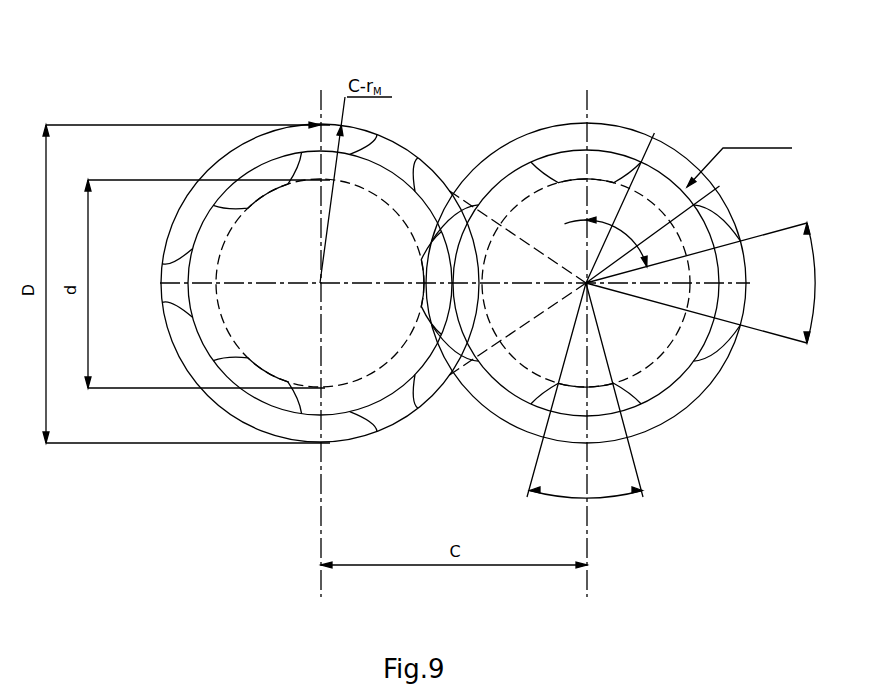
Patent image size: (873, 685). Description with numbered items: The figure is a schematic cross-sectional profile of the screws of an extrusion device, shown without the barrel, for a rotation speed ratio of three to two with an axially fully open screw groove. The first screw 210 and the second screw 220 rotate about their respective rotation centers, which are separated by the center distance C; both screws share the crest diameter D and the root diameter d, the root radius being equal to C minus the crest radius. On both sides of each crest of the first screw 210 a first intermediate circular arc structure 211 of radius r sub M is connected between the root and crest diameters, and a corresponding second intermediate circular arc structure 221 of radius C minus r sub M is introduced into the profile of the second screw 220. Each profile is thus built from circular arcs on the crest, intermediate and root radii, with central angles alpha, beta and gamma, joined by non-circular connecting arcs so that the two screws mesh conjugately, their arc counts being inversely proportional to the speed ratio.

The first screw 210 is at (722, 373).
The first intermediate circular arc structure 211 is at (500, 170).
The second screw 220 is at (247, 157).
The second intermediate circular arc structure 221 is at (330, 150).